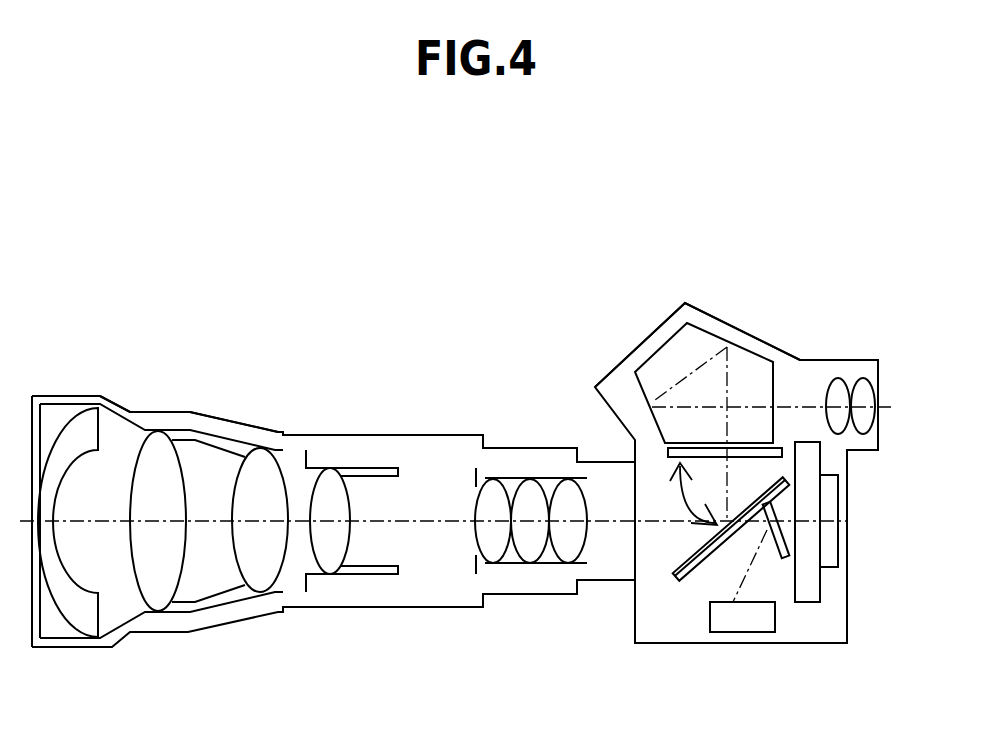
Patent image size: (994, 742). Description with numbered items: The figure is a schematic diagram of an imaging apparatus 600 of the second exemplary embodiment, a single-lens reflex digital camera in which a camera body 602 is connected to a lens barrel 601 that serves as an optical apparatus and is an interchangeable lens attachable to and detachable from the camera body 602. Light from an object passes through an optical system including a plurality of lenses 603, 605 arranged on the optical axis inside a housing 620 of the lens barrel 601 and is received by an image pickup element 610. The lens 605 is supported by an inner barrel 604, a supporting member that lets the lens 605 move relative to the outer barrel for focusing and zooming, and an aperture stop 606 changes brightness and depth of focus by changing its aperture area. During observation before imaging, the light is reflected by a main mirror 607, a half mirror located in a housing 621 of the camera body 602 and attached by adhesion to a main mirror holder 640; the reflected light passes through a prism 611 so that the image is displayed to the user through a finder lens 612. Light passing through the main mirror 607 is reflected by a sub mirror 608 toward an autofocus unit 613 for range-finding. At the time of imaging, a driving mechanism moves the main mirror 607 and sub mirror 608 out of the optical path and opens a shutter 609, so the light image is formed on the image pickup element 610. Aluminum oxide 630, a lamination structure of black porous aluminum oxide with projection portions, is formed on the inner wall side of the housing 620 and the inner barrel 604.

The imaging apparatus 600 is at (540, 178).
The lens barrel 601 is at (605, 267).
The camera body 602 is at (622, 267).
The lens 603 is at (100, 396).
The inner barrel 604 is at (348, 467).
The lens 605 is at (332, 566).
The aperture stop 606 is at (467, 477).
The main mirror 607 is at (688, 578).
The sub mirror 608 is at (778, 537).
The shutter 609 is at (808, 592).
The image pickup element 610 is at (830, 557).
The prism 611 is at (755, 372).
The finder lens 612 is at (865, 378).
The autofocus (AF) unit 613 is at (740, 632).
The housing 620 is at (247, 424).
The housing 621 is at (632, 351).
The aluminum oxide 630 is at (178, 413).
The main mirror holder 640 is at (695, 579).